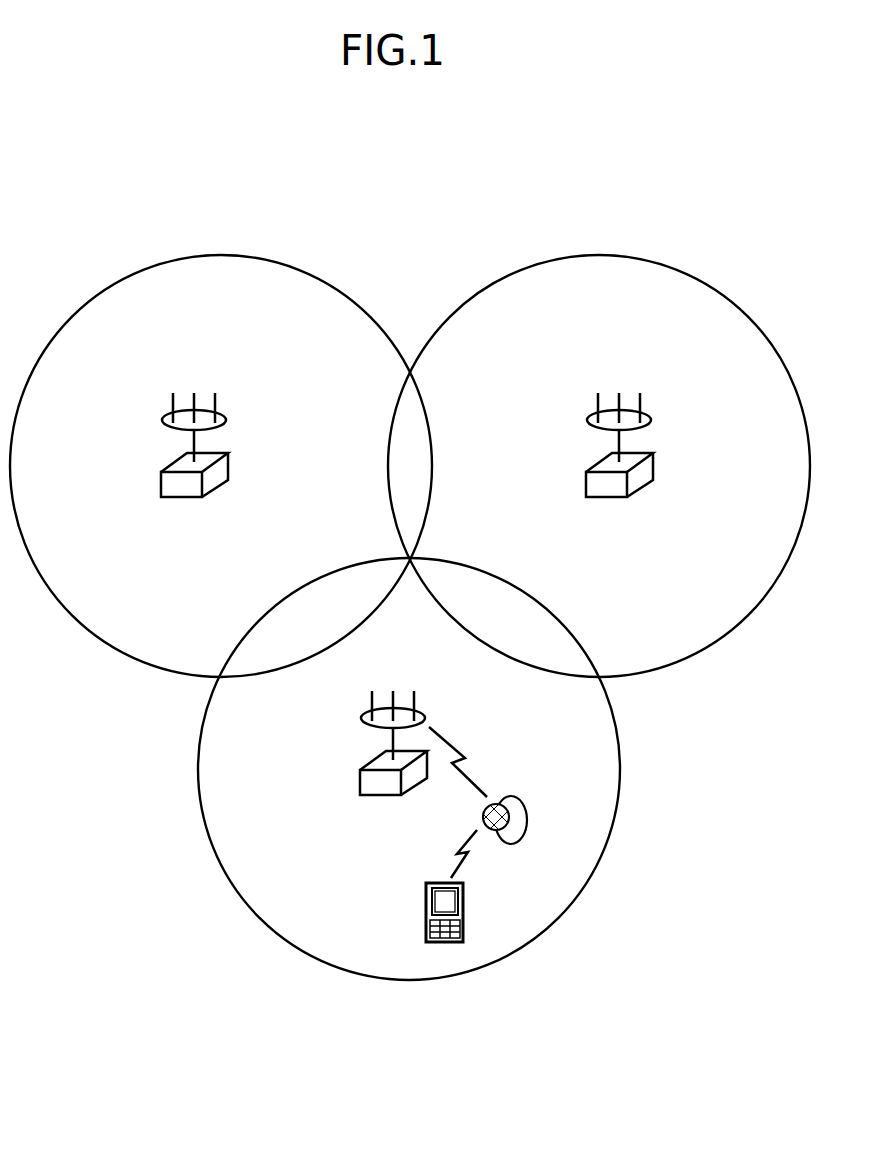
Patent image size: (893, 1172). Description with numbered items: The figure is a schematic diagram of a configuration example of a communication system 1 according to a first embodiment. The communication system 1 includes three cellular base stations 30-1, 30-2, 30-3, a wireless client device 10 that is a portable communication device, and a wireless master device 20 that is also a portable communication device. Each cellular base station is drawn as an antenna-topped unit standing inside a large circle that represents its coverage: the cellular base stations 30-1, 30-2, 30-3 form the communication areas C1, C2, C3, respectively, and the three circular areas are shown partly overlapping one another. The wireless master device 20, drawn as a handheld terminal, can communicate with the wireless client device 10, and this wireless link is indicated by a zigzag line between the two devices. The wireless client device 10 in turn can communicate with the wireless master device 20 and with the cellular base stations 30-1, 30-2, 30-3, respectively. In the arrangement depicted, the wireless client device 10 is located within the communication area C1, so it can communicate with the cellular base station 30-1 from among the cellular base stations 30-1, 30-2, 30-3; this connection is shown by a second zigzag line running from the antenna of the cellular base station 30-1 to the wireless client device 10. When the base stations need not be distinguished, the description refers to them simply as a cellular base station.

The communication system 1 is at (357, 198).
The wireless client device 10 is at (494, 800).
The wireless master device 20 is at (425, 900).
The cellular base station 30-1 is at (357, 776).
The cellular base station 30-2 is at (585, 481).
The cellular base station 30-3 is at (231, 465).
The communication area C1 is at (620, 775).
The communication area C2 is at (585, 255).
The communication area C3 is at (220, 255).